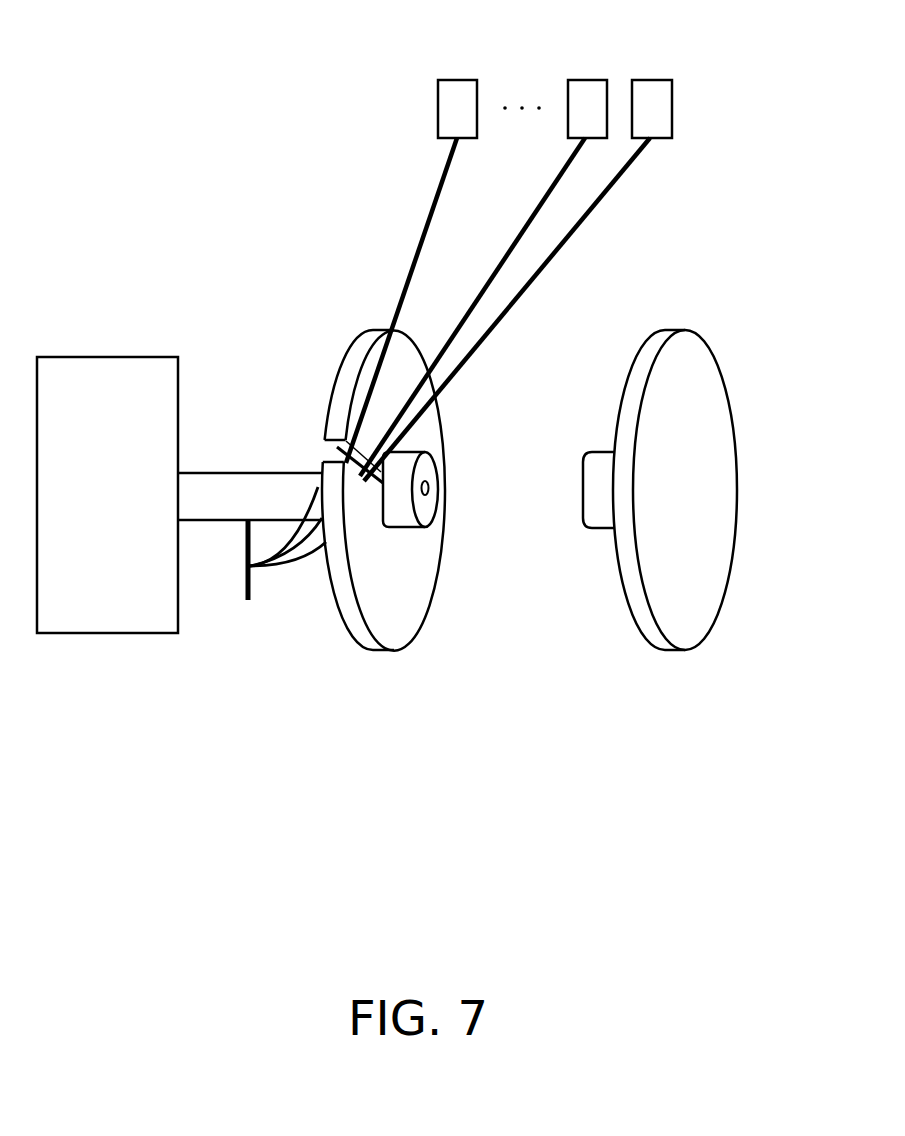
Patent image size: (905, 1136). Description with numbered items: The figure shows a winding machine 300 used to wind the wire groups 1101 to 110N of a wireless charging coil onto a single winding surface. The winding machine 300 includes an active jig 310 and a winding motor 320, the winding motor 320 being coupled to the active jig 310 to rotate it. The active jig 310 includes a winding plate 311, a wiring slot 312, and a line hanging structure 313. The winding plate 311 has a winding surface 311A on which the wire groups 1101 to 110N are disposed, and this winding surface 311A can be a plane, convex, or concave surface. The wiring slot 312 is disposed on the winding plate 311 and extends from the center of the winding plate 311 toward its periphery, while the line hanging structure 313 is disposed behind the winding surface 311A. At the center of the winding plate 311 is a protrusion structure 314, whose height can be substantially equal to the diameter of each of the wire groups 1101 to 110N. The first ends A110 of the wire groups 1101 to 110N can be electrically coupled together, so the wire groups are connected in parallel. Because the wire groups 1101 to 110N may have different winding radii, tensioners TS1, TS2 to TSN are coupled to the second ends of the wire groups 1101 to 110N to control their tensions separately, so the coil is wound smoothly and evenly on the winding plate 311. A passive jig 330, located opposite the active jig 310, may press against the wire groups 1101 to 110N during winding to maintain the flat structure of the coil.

The tensioner TSN is at (455, 80).
The tensioner TS2 is at (585, 80).
The tensioner TS1 is at (650, 80).
The wire group 110N is at (421, 234).
The wire group 1101 is at (528, 306).
The winding machine 300 is at (569, 681).
The active jig 310 is at (352, 290).
The winding plate 311 is at (354, 362).
The winding surface 311A is at (397, 610).
The wiring slot 312 is at (324, 440).
The line hanging structure 313 is at (246, 545).
The protrusion structure 314 is at (430, 506).
The winding motor 320 is at (106, 357).
The passive jig 330 is at (715, 408).
The first ends A110 is at (289, 606).